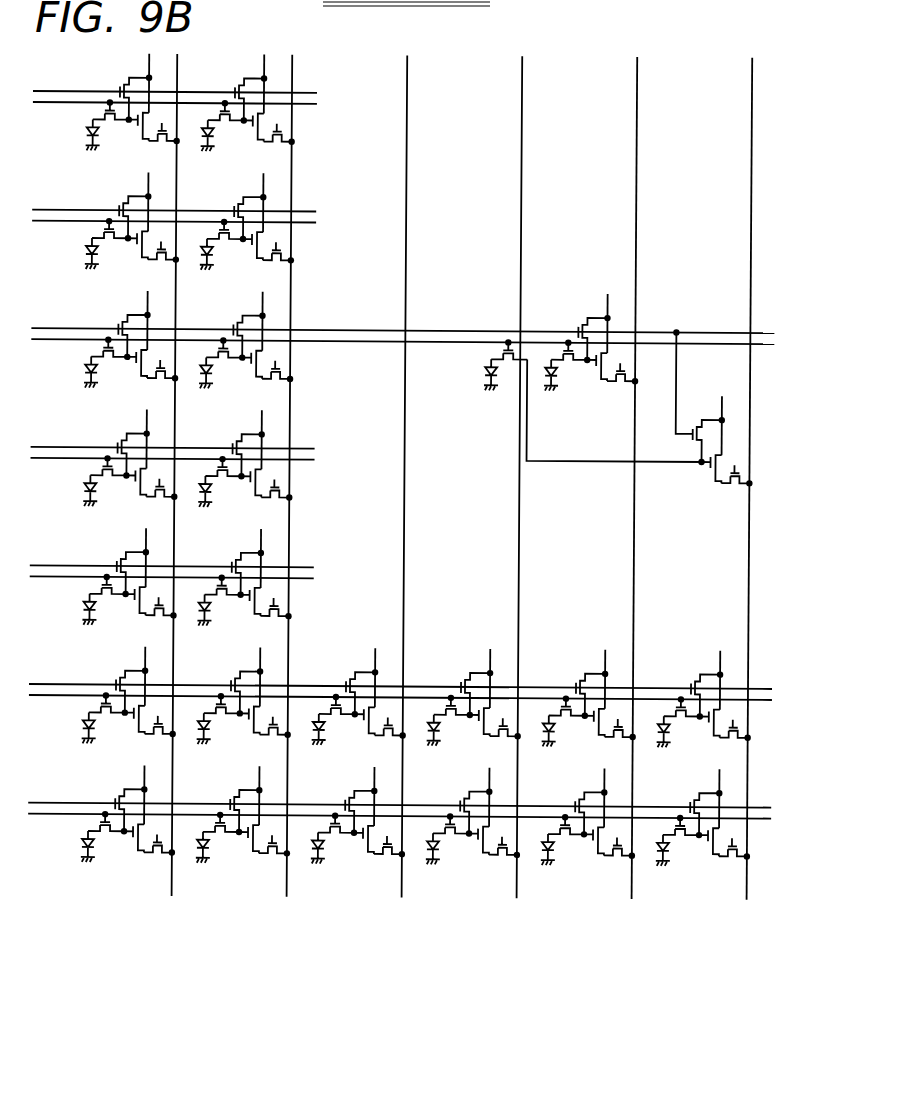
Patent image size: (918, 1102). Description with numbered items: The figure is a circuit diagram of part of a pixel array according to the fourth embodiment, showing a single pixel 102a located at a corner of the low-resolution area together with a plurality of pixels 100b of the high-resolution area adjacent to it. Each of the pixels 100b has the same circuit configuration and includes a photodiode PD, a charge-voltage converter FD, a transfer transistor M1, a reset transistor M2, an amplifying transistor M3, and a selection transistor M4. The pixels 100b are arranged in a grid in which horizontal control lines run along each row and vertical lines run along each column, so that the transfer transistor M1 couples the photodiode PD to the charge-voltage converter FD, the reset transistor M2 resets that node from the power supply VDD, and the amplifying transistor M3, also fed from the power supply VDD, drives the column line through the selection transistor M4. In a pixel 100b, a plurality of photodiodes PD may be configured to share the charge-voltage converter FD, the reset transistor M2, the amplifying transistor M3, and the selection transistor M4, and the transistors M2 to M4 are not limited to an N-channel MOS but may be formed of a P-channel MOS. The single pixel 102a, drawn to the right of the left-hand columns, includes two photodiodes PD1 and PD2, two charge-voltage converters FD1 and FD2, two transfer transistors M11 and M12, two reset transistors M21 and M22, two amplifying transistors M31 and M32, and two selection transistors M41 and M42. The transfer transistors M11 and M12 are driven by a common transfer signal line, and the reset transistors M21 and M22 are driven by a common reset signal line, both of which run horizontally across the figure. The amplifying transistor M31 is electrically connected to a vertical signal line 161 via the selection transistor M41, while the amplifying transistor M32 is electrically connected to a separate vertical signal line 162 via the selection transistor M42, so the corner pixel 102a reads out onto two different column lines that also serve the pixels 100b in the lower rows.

The pixels of the high-resolution area 100b is at (416, 504).
The single pixel 102a is at (617, 400).
The vertical signal line 161 is at (639, 159).
The vertical signal line 162 is at (754, 159).
The photodiode PD is at (80, 847).
The transfer transistor M1 is at (108, 832).
The reset transistor M2 is at (121, 797).
The amplifying transistor M3 is at (138, 832).
The selection transistor M4 is at (160, 852).
The charge-voltage converter FD is at (125, 853).
The power supply VDD is at (146, 784).
The photodiode PD1 is at (547, 372).
The photodiode PD2 is at (486, 368).
The transfer transistor M11 is at (566, 346).
The transfer transistor M12 is at (505, 346).
The reset transistor M21 is at (580, 322).
The reset transistor M22 is at (696, 437).
The amplifying transistor M31 is at (614, 352).
The amplifying transistor M32 is at (727, 452).
The selection transistor M41 is at (621, 380).
The selection transistor M42 is at (736, 482).
The charge-voltage converter FD1 is at (587, 360).
The charge-voltage converter FD2 is at (703, 462).